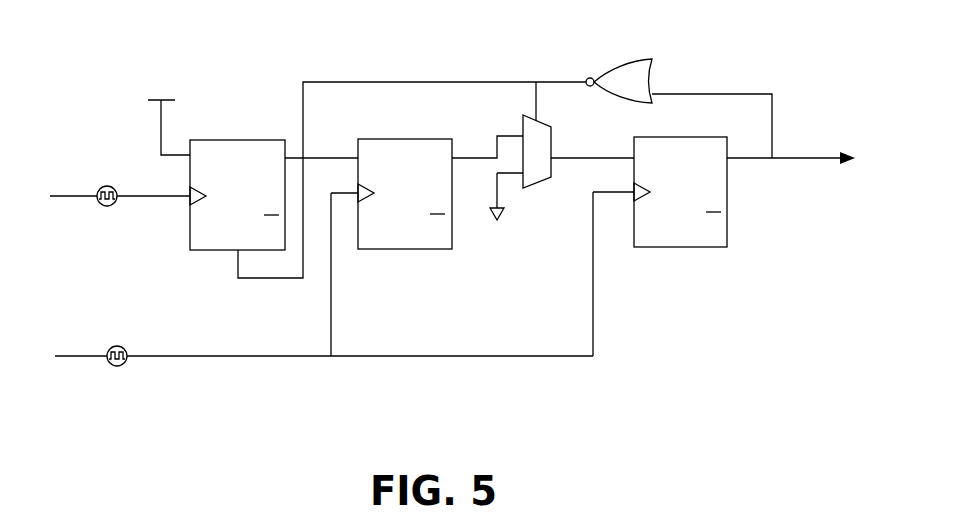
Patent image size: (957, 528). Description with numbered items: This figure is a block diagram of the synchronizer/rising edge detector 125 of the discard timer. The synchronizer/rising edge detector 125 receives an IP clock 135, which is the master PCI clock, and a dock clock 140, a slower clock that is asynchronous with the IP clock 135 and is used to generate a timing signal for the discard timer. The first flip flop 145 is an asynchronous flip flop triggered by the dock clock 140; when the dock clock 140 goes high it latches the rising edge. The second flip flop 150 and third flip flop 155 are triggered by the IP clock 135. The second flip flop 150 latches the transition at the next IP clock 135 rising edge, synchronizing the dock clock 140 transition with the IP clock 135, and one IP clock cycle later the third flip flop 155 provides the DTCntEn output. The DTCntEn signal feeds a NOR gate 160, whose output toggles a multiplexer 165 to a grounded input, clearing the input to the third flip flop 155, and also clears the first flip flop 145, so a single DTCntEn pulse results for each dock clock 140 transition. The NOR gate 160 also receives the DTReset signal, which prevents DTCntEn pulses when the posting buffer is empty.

The synchronizer/rising edge detector 125 is at (106, 52).
The IP clock 135 is at (110, 367).
The dock clock 140 is at (97, 204).
The first flip flop 145 is at (265, 205).
The second flip flop 150 is at (434, 204).
The third flip flop 155 is at (710, 202).
The NOR gate 160 is at (600, 62).
The multiplexer 165 is at (544, 187).